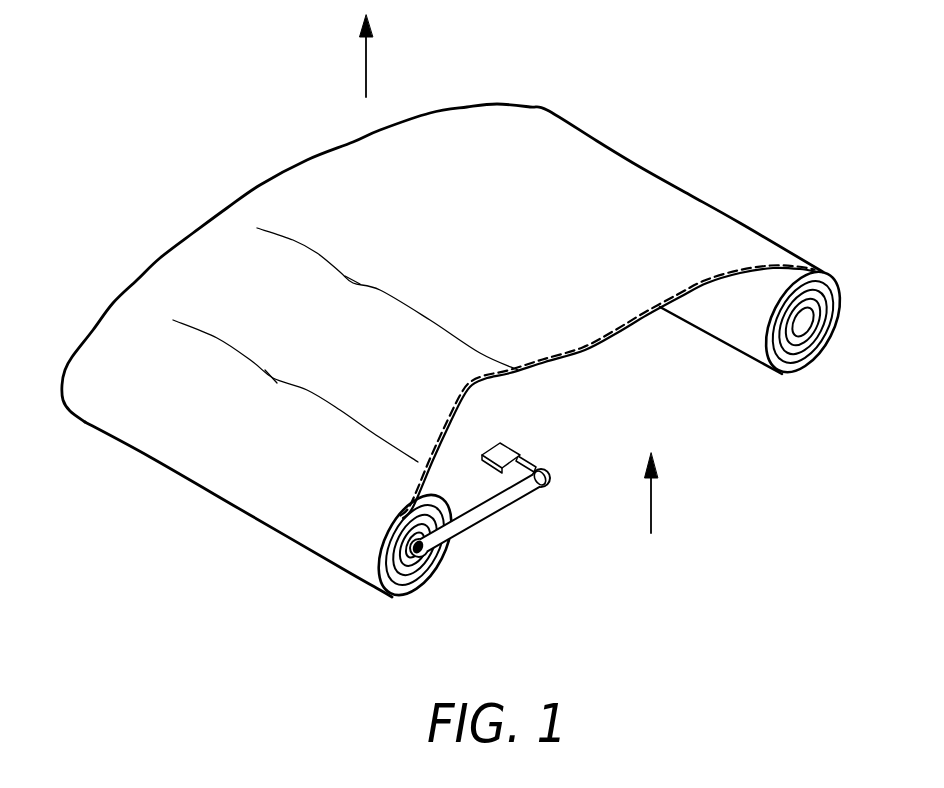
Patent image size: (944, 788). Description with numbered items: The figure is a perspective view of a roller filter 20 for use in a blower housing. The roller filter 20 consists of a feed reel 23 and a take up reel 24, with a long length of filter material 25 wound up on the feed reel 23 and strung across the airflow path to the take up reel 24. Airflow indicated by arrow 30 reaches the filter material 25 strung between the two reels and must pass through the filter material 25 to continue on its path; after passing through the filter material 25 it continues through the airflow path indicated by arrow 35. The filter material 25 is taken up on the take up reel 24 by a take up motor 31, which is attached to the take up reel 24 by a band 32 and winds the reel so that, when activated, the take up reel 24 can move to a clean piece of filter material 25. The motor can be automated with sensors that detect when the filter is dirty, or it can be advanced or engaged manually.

The roller filter 20 is at (469, 368).
The feed reel 23 is at (806, 323).
The take up reel 24 is at (418, 558).
The filter material 25 is at (339, 204).
The arrow indicating airflow 30 is at (651, 504).
The take up motor 31 is at (505, 446).
The band 32 is at (512, 508).
The arrow indicating airflow path 35 is at (366, 63).